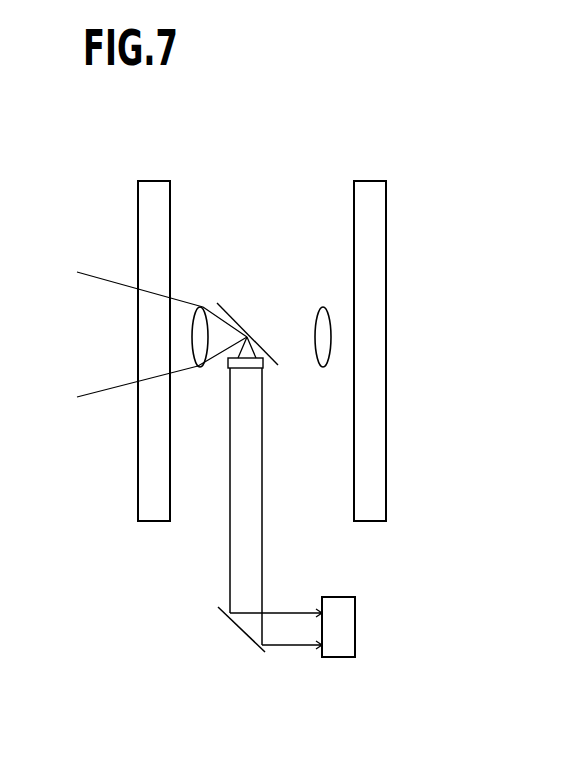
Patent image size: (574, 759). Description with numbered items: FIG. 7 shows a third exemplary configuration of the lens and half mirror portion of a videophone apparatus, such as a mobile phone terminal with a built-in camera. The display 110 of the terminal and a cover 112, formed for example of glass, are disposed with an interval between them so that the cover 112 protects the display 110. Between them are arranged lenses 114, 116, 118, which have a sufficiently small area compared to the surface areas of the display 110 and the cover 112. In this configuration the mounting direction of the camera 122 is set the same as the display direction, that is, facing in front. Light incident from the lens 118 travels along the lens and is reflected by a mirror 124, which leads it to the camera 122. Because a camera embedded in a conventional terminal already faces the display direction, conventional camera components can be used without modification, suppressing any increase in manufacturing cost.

The display 110 is at (370, 332).
The cover 112 is at (153, 332).
The lens 114 is at (312, 324).
The lens 116 is at (191, 323).
The lens 118 is at (252, 474).
The camera 122 is at (331, 648).
The mirror 124 is at (207, 631).